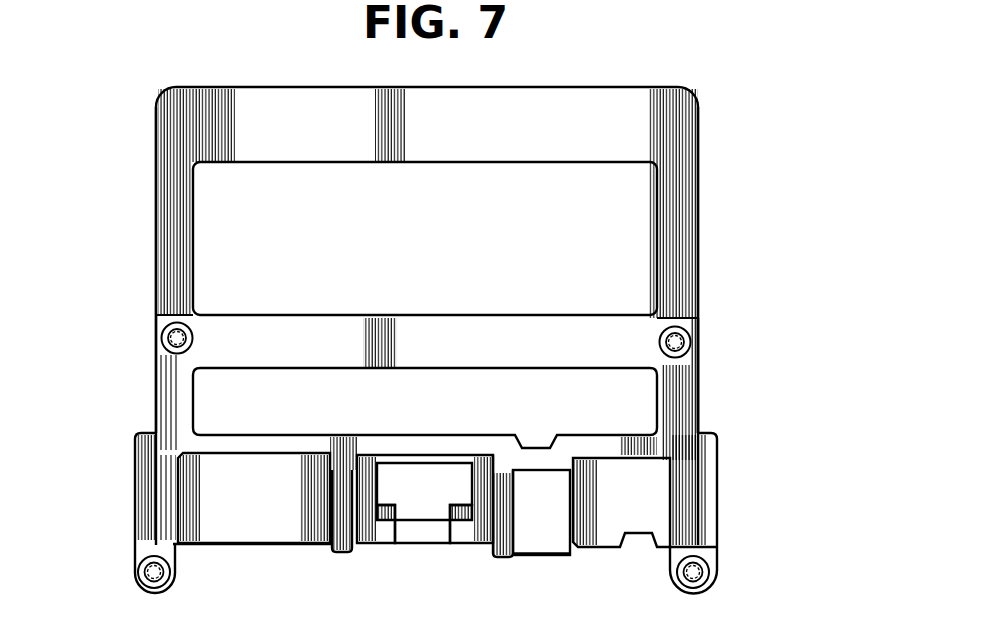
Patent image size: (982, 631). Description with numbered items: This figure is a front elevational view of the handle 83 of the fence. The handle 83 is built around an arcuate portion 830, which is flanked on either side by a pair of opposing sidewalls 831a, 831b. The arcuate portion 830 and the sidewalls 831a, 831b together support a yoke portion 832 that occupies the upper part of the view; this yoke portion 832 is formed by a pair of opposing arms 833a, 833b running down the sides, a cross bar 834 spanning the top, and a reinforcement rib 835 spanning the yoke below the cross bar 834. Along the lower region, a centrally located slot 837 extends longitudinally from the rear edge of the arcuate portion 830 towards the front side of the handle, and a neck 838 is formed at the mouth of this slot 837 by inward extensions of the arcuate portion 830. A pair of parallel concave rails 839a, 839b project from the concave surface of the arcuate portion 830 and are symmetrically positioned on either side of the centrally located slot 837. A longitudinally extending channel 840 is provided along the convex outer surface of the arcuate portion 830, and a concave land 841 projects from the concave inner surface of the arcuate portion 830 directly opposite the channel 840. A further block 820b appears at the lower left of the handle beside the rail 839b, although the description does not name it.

The handle 83 is at (750, 96).
The yoke portion 832 is at (699, 184).
The opposing arm 833a is at (690, 392).
The opposing arm 833b is at (170, 241).
The cross bar 834 is at (516, 128).
The reinforcement rib 835 is at (501, 352).
The longitudinally extending channel 840 is at (545, 447).
The sidewall 831a is at (702, 490).
The sidewall 831b is at (148, 495).
The left lower block 820b is at (296, 508).
The centrally located slot 837 is at (452, 497).
The neck 838 is at (425, 518).
The concave rail 839a is at (503, 542).
The concave rail 839b is at (340, 556).
The concave land 841 is at (552, 508).
The arcuate portion 830 is at (526, 555).